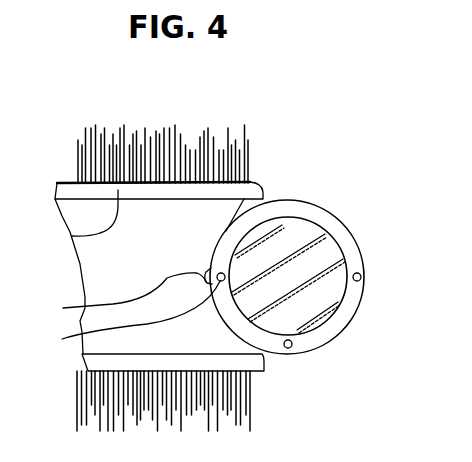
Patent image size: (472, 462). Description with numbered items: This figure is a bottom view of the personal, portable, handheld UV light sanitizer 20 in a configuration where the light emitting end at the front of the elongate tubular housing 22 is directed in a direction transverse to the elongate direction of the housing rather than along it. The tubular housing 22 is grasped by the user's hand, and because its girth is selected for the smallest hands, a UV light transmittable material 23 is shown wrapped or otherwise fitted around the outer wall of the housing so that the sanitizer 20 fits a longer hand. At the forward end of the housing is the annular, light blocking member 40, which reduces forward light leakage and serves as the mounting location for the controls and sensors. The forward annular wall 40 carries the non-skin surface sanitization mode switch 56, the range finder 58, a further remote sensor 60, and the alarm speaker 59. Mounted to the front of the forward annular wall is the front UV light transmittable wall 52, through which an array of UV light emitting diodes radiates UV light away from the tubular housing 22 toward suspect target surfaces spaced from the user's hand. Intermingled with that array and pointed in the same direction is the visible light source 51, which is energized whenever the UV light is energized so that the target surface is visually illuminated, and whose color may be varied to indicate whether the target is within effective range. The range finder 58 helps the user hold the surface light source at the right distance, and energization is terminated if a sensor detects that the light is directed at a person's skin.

The UV light sanitizer 20 is at (249, 136).
The tubular housing 22 is at (163, 208).
The UV light transmittable material 23 is at (72, 236).
The forward annular light blocking member 40 is at (330, 337).
The visible light source 51 is at (108, 402).
The front UV light transmittable wall 52 is at (290, 274).
The non-skin surface sanitization mode switch 56 is at (63, 308).
The range finder 58 is at (62, 339).
The alarm speaker 59 is at (289, 349).
The remote sensor 60 is at (362, 278).